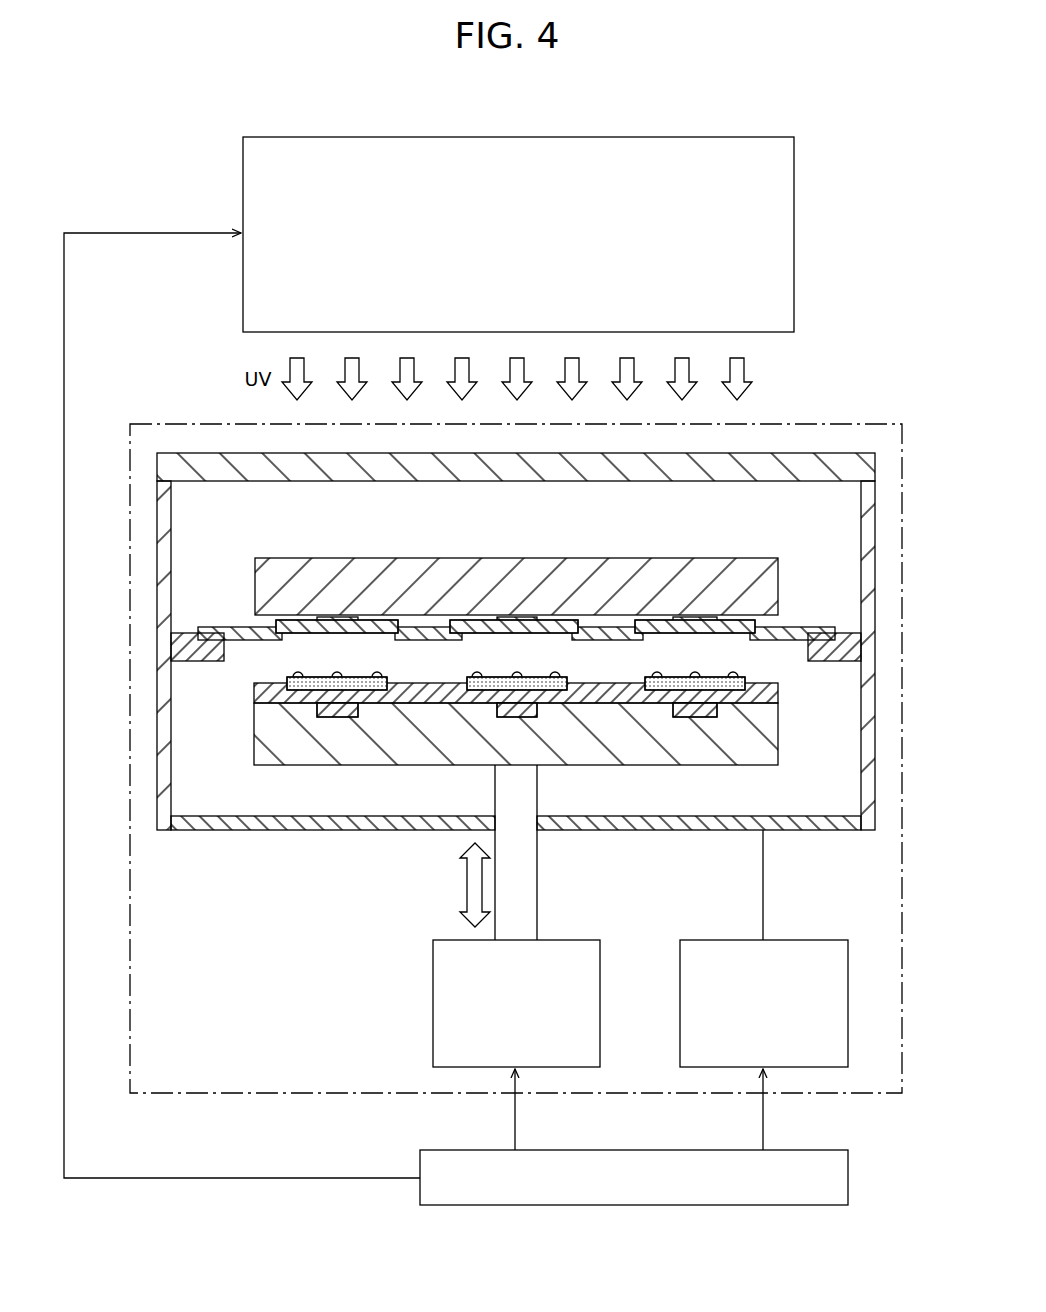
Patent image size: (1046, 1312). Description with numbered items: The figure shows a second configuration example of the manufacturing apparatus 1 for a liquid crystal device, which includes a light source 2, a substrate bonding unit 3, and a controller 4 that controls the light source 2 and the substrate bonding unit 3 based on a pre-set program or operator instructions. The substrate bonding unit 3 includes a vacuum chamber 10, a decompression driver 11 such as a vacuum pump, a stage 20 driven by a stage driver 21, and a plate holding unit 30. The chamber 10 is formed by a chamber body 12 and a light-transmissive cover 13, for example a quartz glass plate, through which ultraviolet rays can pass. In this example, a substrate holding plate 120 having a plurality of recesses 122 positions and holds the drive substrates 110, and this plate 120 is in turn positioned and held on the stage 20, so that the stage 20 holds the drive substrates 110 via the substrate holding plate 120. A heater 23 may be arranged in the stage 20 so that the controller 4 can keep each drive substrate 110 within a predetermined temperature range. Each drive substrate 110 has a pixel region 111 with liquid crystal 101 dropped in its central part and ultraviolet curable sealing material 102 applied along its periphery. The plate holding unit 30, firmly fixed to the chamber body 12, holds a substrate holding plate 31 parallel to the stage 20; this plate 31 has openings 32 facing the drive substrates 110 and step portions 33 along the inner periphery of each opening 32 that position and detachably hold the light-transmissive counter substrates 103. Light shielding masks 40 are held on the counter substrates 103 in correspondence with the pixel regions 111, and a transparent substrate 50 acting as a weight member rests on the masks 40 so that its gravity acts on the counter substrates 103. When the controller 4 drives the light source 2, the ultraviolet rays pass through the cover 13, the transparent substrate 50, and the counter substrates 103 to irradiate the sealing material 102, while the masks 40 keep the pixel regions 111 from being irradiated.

The manufacturing apparatus 1 is at (852, 156).
The light source 2 is at (794, 237).
The substrate bonding unit 3 is at (894, 425).
The controller 4 is at (848, 1180).
The vacuum chamber 10 is at (552, 641).
The decompression driver 11 is at (848, 1000).
The chamber body 12 is at (862, 520).
The cover 13 is at (875, 468).
The stage 20 is at (508, 741).
The stage driver 21 is at (433, 990).
The heater 23 is at (338, 716).
The plate holding unit 30 is at (513, 632).
The substrate holding plate 31 is at (222, 626).
The opening 32 is at (753, 644).
The step portion 33 is at (640, 629).
The light shielding mask 40 is at (340, 617).
The transparent substrate 50 is at (750, 557).
The liquid crystal 101 is at (518, 702).
The sealing material 102 is at (477, 692).
The counter substrate 103 is at (300, 617).
The drive substrate 110 is at (300, 692).
The pixel region 111 is at (690, 712).
The substrate holding plate 120 is at (254, 688).
The recess 122 is at (385, 692).